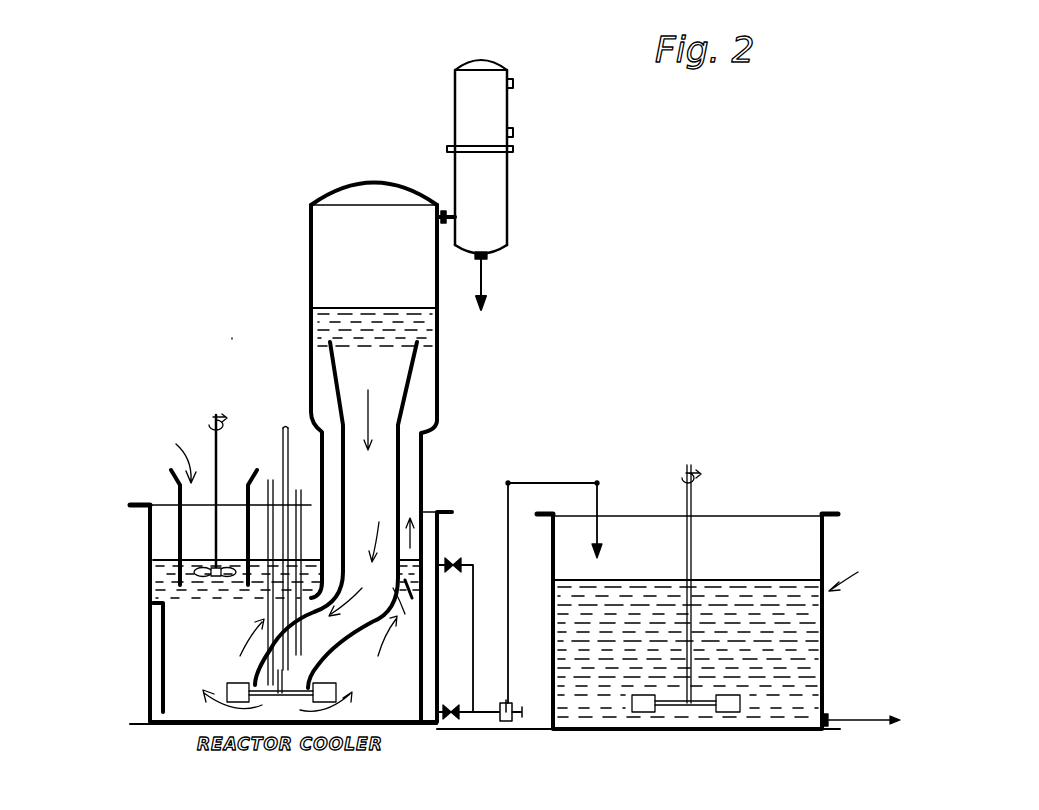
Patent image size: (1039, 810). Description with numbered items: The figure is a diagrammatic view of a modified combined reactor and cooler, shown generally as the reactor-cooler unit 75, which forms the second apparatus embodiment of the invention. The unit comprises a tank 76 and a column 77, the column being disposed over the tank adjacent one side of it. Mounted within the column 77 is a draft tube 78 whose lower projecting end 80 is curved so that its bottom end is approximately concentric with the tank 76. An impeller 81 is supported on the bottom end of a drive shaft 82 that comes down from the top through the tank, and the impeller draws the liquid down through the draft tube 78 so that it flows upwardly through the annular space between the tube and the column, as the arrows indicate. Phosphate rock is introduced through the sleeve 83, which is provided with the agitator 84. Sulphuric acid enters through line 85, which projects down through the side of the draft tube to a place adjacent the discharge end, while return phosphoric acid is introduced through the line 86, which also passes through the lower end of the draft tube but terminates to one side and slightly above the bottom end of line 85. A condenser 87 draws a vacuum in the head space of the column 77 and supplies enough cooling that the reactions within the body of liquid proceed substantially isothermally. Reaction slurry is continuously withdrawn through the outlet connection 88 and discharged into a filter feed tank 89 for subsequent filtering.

The reactor-cooler unit 75 is at (234, 338).
The tank 76 is at (150, 517).
The column 77 is at (310, 242).
The draft tube 78 is at (408, 393).
The lower projecting end 80 is at (272, 648).
The impeller 81 is at (228, 696).
The drive shaft 82 is at (284, 436).
The sleeve 83 is at (178, 543).
The agitator 84 is at (207, 578).
The sulphuric acid inlet line 85 is at (268, 602).
The return phosphoric acid line 86 is at (299, 506).
The condenser 87 is at (508, 194).
The outlet connection 88 is at (452, 564).
The filter feed tank 89 is at (823, 627).